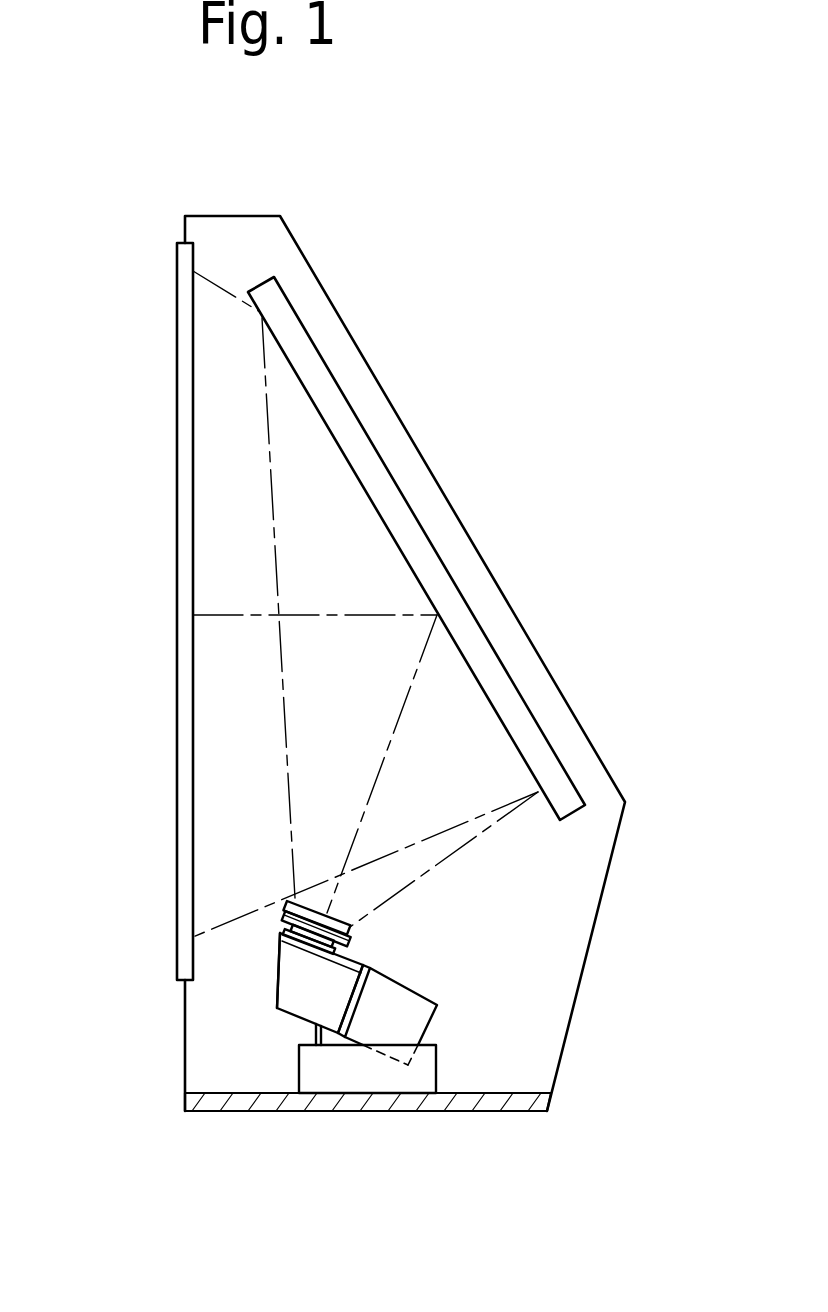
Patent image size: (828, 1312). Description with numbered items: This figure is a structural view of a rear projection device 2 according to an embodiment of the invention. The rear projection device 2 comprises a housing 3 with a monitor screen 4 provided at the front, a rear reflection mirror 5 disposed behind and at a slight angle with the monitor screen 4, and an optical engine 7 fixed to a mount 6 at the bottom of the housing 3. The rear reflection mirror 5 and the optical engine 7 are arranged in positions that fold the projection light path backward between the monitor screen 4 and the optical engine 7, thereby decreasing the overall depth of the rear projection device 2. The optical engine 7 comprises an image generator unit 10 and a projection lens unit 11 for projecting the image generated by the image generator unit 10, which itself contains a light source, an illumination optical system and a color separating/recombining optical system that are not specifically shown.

The rear projection device 2 is at (388, 258).
The housing 3 is at (510, 1111).
The monitor screen 4 is at (185, 802).
The rear reflection mirror 5 is at (417, 543).
The mount 6 is at (437, 1077).
The optical engine 7 is at (451, 957).
The image generator unit 10 is at (426, 1030).
The projection lens unit 11 is at (272, 990).